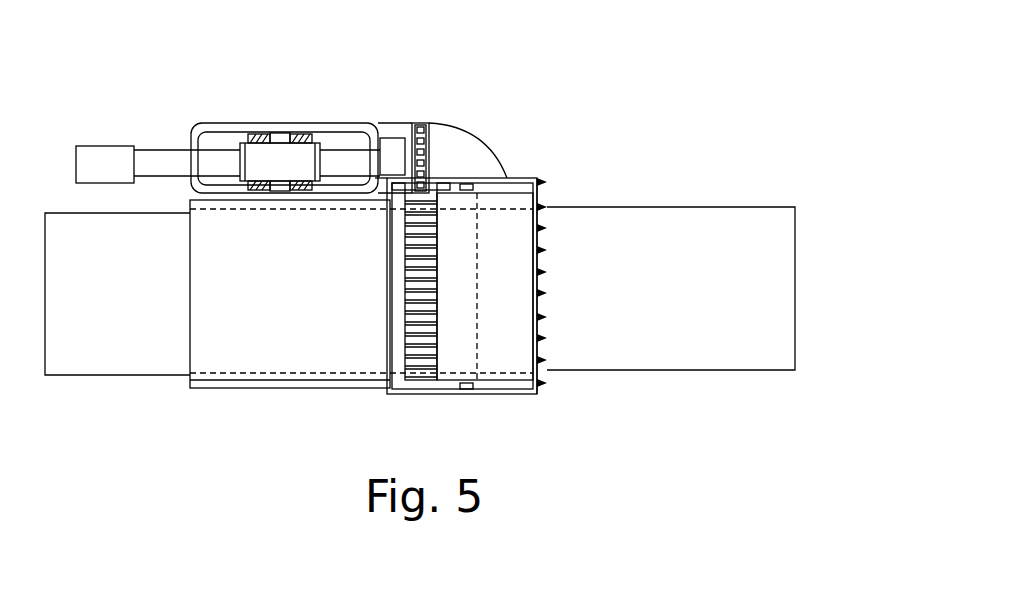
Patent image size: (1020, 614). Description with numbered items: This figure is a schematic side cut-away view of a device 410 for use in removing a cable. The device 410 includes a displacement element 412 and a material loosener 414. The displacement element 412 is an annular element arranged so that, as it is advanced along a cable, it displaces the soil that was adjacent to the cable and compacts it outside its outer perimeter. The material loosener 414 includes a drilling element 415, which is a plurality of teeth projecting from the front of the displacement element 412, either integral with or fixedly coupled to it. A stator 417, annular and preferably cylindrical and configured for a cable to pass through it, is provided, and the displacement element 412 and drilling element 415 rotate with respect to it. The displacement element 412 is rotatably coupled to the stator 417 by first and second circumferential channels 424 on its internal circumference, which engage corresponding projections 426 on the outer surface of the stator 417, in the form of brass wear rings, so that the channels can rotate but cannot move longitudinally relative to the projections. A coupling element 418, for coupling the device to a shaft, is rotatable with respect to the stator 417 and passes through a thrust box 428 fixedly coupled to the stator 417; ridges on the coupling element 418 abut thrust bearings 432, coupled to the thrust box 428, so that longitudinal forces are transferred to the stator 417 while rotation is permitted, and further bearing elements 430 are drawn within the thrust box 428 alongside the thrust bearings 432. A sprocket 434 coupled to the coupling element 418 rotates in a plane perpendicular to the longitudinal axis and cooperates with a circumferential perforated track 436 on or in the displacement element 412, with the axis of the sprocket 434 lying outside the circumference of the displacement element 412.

The device 410 is at (494, 67).
The displacement element 412 is at (510, 347).
The material loosener 414 is at (551, 155).
The drilling element 415 is at (539, 183).
The stator 417 is at (288, 358).
The coupling element 418 is at (102, 162).
The circumferential channels 424 is at (467, 388).
The projections 426 is at (468, 183).
The thrust box 428 is at (242, 123).
The bearing 430 is at (238, 138).
The thrust bearings 432 is at (300, 134).
The sprocket 434 is at (421, 122).
The perforated track 436 is at (420, 370).